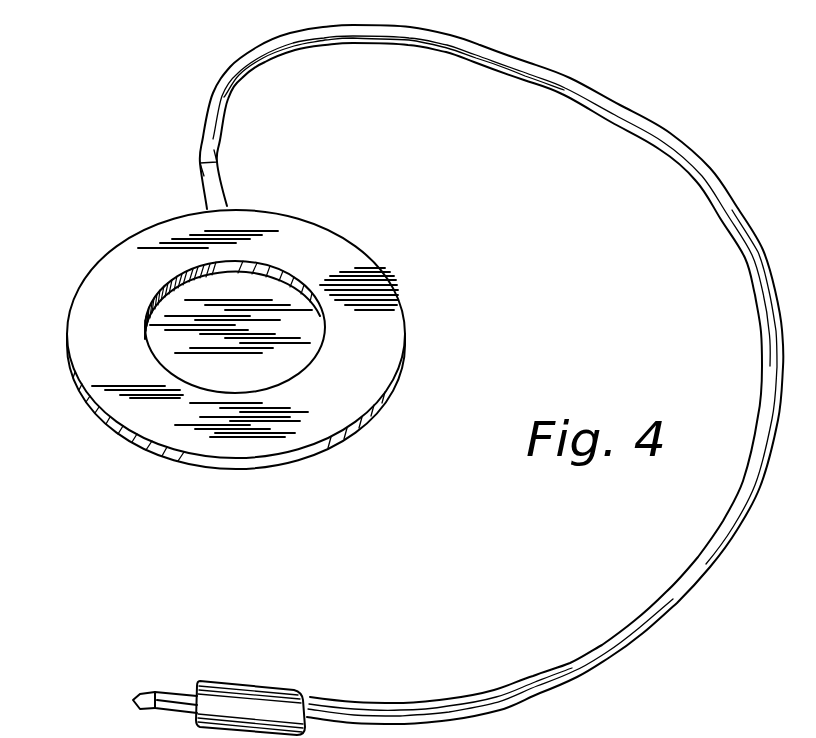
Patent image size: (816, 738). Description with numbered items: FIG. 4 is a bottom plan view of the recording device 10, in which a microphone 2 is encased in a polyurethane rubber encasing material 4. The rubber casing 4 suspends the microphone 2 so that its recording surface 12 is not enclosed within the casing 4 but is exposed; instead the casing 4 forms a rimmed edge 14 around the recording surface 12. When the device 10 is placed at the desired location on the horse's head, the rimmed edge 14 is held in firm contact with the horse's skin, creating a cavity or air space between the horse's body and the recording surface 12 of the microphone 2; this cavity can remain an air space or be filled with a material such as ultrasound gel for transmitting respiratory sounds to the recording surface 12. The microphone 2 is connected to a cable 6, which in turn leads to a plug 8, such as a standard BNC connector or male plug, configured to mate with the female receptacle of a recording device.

The device 10 is at (148, 200).
The encasing material 4 is at (93, 298).
The rimmed edge 14 is at (298, 243).
The recording surface 12 is at (202, 372).
The microphone 2 is at (260, 365).
The cable 6 is at (677, 605).
The plug 8 is at (263, 703).